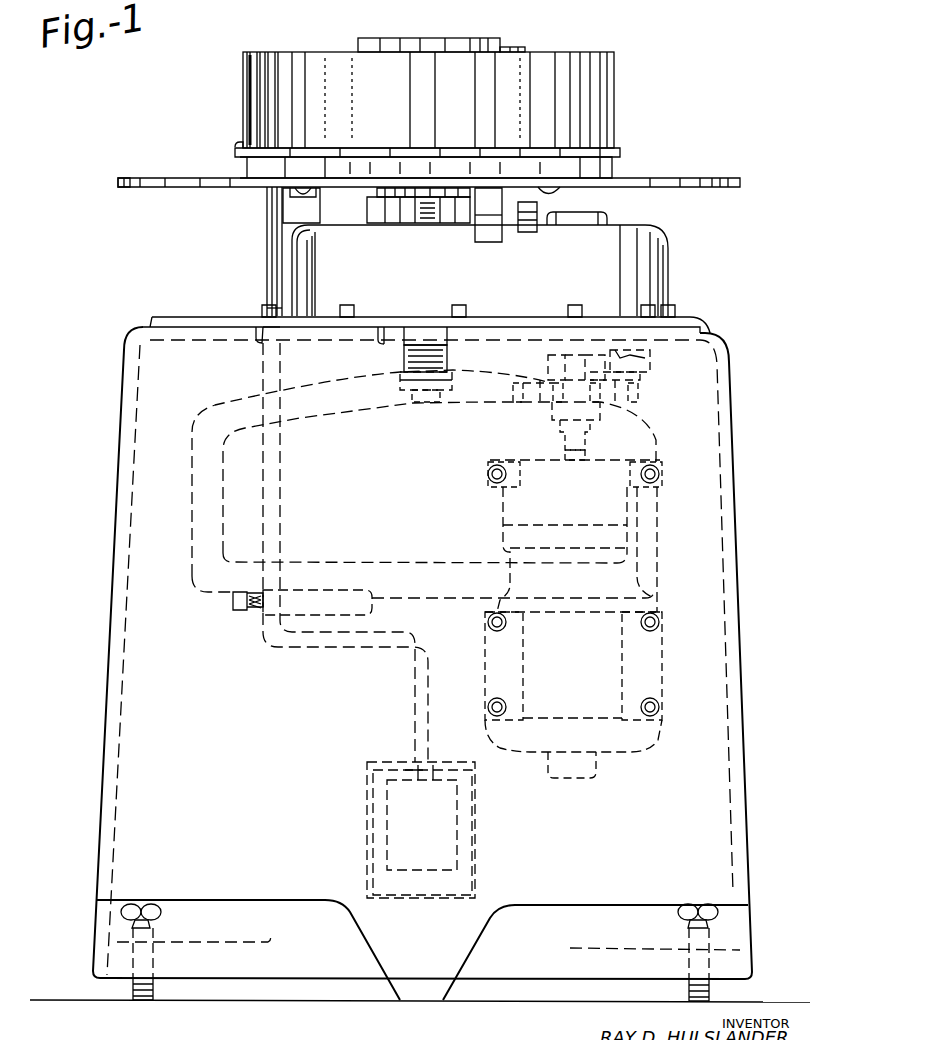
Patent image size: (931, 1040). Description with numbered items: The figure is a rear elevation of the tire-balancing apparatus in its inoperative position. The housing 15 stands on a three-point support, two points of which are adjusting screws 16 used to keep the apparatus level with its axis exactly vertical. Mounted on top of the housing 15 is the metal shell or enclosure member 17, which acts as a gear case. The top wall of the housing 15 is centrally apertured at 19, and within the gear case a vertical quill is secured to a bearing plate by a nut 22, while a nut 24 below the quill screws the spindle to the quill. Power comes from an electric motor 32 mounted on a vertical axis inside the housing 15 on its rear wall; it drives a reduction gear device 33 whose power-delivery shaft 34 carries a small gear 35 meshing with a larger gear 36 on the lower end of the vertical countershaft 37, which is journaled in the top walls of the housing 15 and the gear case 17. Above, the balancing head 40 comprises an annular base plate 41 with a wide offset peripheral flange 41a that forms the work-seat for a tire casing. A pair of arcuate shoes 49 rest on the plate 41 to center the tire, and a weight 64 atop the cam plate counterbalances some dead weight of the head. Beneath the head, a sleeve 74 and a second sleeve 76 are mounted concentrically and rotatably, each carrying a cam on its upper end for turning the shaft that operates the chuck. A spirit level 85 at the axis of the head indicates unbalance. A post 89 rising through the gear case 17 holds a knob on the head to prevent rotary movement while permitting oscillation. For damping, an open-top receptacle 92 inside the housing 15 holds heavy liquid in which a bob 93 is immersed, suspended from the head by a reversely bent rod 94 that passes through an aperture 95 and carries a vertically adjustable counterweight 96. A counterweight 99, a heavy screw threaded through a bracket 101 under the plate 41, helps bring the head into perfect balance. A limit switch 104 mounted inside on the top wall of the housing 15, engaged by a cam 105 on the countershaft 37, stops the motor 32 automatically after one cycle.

The housing 15 is at (730, 450).
The adjusting screws 16 is at (130, 980).
The metal shell or enclosure member 17 is at (655, 262).
The aperture 19 is at (378, 345).
The nut 22 is at (450, 345).
The nut 24 is at (402, 382).
The electric motor 32 is at (628, 752).
The reduction gear device 33 is at (503, 510).
The power-delivery shaft 34 is at (565, 432).
The gear 35 is at (610, 420).
The gear 36 is at (636, 396).
The countershaft 37 is at (550, 362).
The balancing head 40 is at (631, 118).
The base plate 41 is at (612, 172).
The peripheral flange 41a is at (150, 188).
The arcuate shoes 49 is at (246, 52).
The weight 64 is at (520, 47).
The sleeve 74 is at (375, 194).
The sleeve 76 is at (368, 215).
The spirit level 85 is at (412, 38).
The post 89 is at (300, 208).
The receptacle 92 is at (476, 828).
The weight or bob 93 is at (387, 802).
The rod 94 is at (268, 258).
The aperture 95 is at (258, 344).
The counterweight 96 is at (372, 610).
The counterweight 99 is at (524, 232).
The bracket 101 is at (494, 242).
The limit switch 104 is at (650, 362).
The cam 105 is at (640, 380).